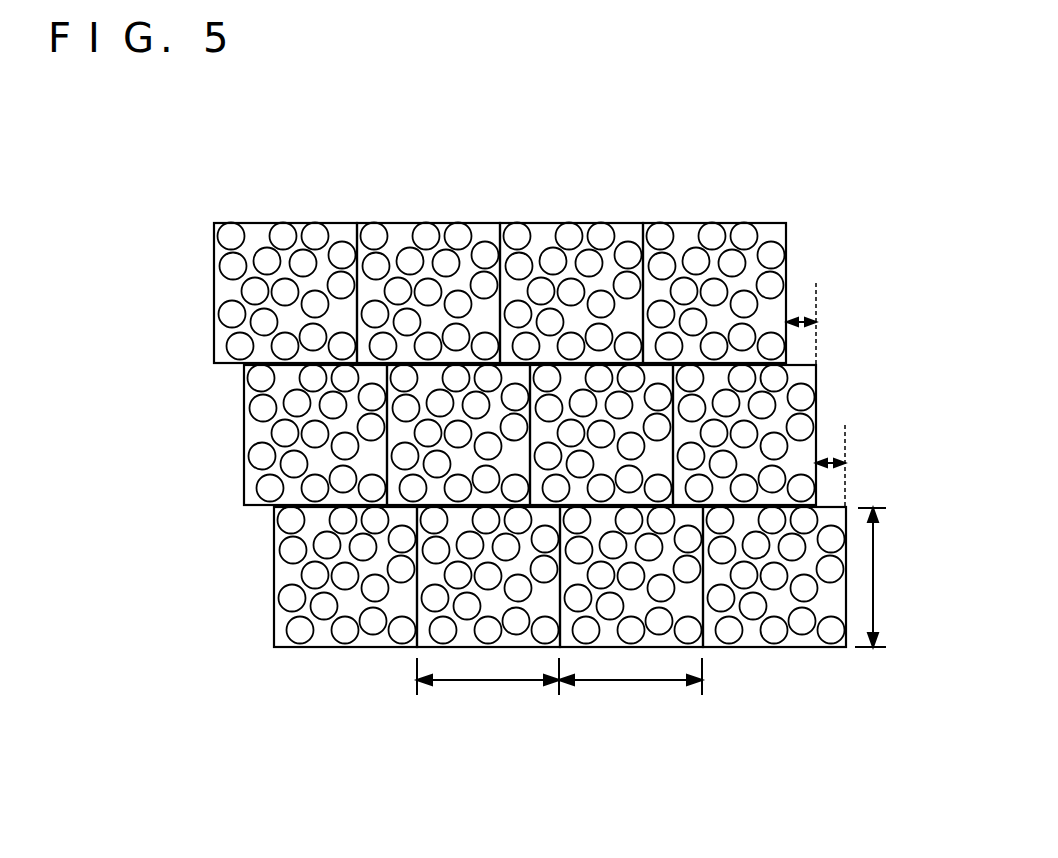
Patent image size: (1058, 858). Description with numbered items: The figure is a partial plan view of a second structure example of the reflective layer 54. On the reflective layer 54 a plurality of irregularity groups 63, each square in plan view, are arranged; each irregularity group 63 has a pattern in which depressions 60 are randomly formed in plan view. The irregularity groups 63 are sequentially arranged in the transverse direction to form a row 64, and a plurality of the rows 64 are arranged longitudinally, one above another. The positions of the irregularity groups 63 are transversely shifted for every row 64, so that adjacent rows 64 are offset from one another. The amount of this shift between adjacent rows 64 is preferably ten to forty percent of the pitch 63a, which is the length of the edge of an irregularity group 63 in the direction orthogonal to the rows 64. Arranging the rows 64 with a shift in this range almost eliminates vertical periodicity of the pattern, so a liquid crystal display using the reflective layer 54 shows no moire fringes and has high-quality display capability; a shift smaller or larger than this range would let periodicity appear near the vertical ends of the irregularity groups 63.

The reflective layer 54 is at (825, 218).
The depressions 60 is at (227, 267).
The irregularity groups 63 is at (227, 290).
The pitch 63a is at (668, 609).
The row 64 is at (787, 200).